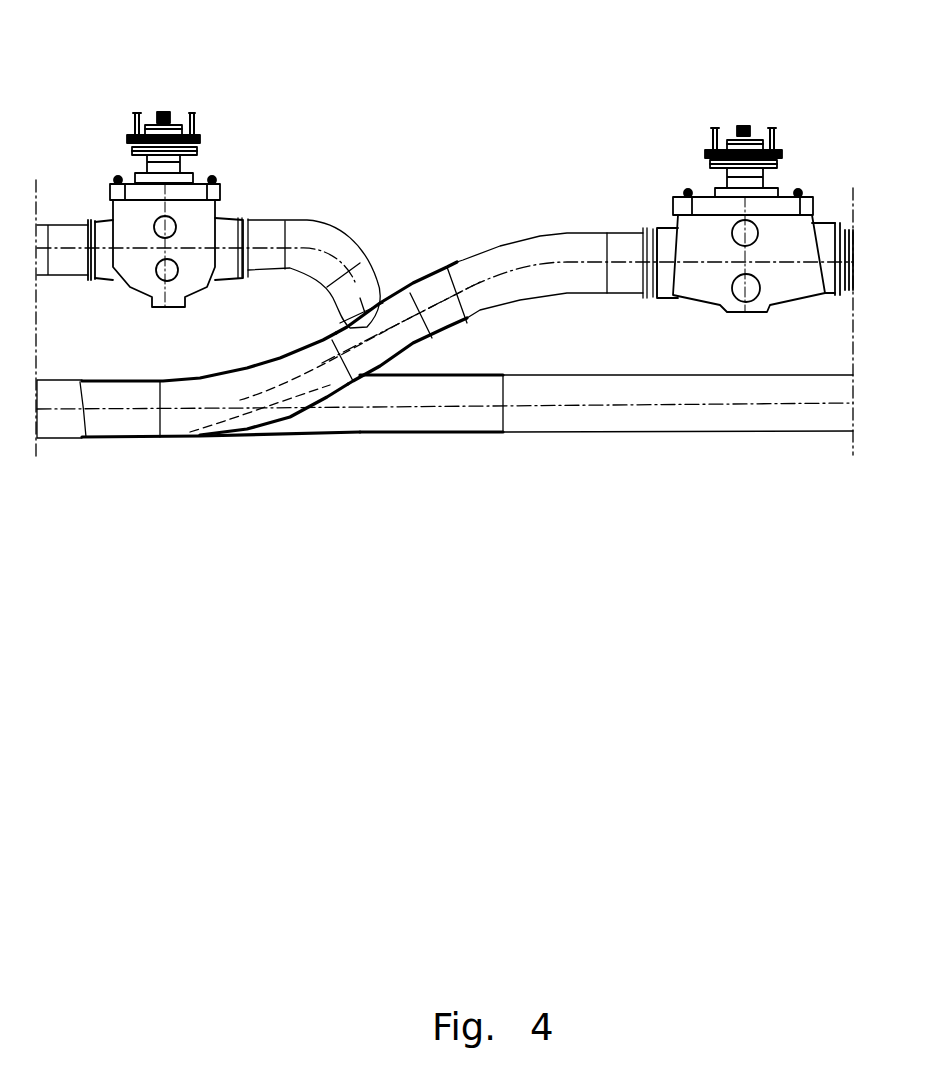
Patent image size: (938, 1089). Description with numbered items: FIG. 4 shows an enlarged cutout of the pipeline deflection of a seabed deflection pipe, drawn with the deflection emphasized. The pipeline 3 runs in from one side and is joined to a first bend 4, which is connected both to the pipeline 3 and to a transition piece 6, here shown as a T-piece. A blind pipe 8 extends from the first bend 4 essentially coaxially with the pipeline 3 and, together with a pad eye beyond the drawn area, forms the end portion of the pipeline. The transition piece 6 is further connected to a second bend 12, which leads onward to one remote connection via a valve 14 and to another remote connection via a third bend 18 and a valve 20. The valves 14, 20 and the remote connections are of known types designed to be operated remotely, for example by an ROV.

The pipeline 3 is at (67, 420).
The first bend 4 is at (262, 388).
The transition piece 6 is at (393, 298).
The blind pipe 8 is at (423, 427).
The second bend 12 is at (500, 263).
The valve 14 is at (683, 190).
The third bend 18 is at (307, 220).
The valve 20 is at (210, 183).